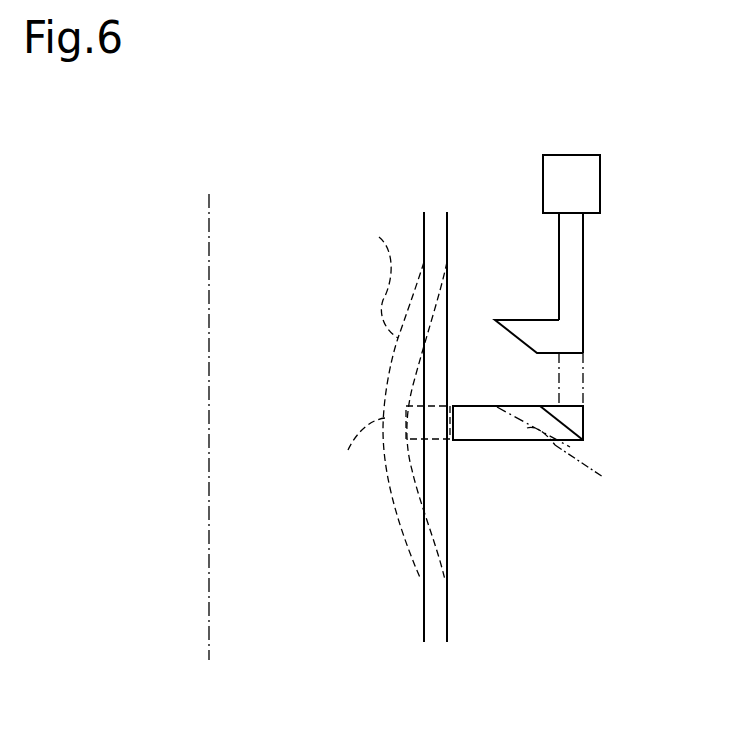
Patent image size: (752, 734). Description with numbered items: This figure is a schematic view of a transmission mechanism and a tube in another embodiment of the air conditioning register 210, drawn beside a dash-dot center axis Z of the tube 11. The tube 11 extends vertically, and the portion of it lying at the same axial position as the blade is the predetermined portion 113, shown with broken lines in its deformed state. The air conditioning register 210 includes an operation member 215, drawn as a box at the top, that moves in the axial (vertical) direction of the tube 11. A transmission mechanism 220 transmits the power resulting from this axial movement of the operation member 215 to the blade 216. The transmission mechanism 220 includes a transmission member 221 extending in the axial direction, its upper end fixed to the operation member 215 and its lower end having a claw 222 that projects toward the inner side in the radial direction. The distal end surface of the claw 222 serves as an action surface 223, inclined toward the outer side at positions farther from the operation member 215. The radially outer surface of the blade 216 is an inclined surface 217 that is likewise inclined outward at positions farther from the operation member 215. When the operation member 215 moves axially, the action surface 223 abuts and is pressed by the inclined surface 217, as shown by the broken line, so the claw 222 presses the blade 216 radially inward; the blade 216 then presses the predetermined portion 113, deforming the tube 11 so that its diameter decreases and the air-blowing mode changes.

The axis Z is at (209, 300).
The air conditioning register 210 is at (187, 172).
The tube 11 is at (424, 228).
The predetermined portion 113 is at (431, 421).
The operation member 215 is at (601, 181).
The transmission mechanism 220 is at (630, 277).
The transmission member 221 is at (585, 300).
The claw 222 is at (540, 334).
The action surface 223 is at (512, 420).
The blade 216 is at (493, 441).
The inclined surface 217 is at (565, 422).